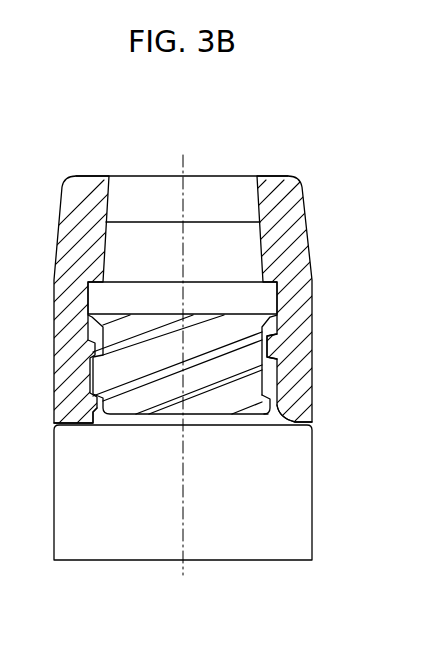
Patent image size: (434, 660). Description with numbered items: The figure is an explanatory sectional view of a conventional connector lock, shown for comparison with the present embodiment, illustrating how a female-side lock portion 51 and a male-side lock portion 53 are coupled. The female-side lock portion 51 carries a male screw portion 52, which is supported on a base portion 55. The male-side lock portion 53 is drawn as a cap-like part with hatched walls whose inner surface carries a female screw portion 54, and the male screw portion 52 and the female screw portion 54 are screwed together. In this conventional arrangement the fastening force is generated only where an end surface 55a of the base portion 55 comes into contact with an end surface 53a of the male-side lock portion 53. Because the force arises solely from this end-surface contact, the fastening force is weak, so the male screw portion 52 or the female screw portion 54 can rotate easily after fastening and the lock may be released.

The female-side lock portion 51 is at (232, 416).
The male screw portion 52 is at (267, 377).
The male-side lock portion 53 is at (305, 192).
The end surface 53a is at (289, 424).
The female screw portion 54 is at (277, 345).
The base portion 55 is at (312, 518).
The end surface 55a is at (303, 407).